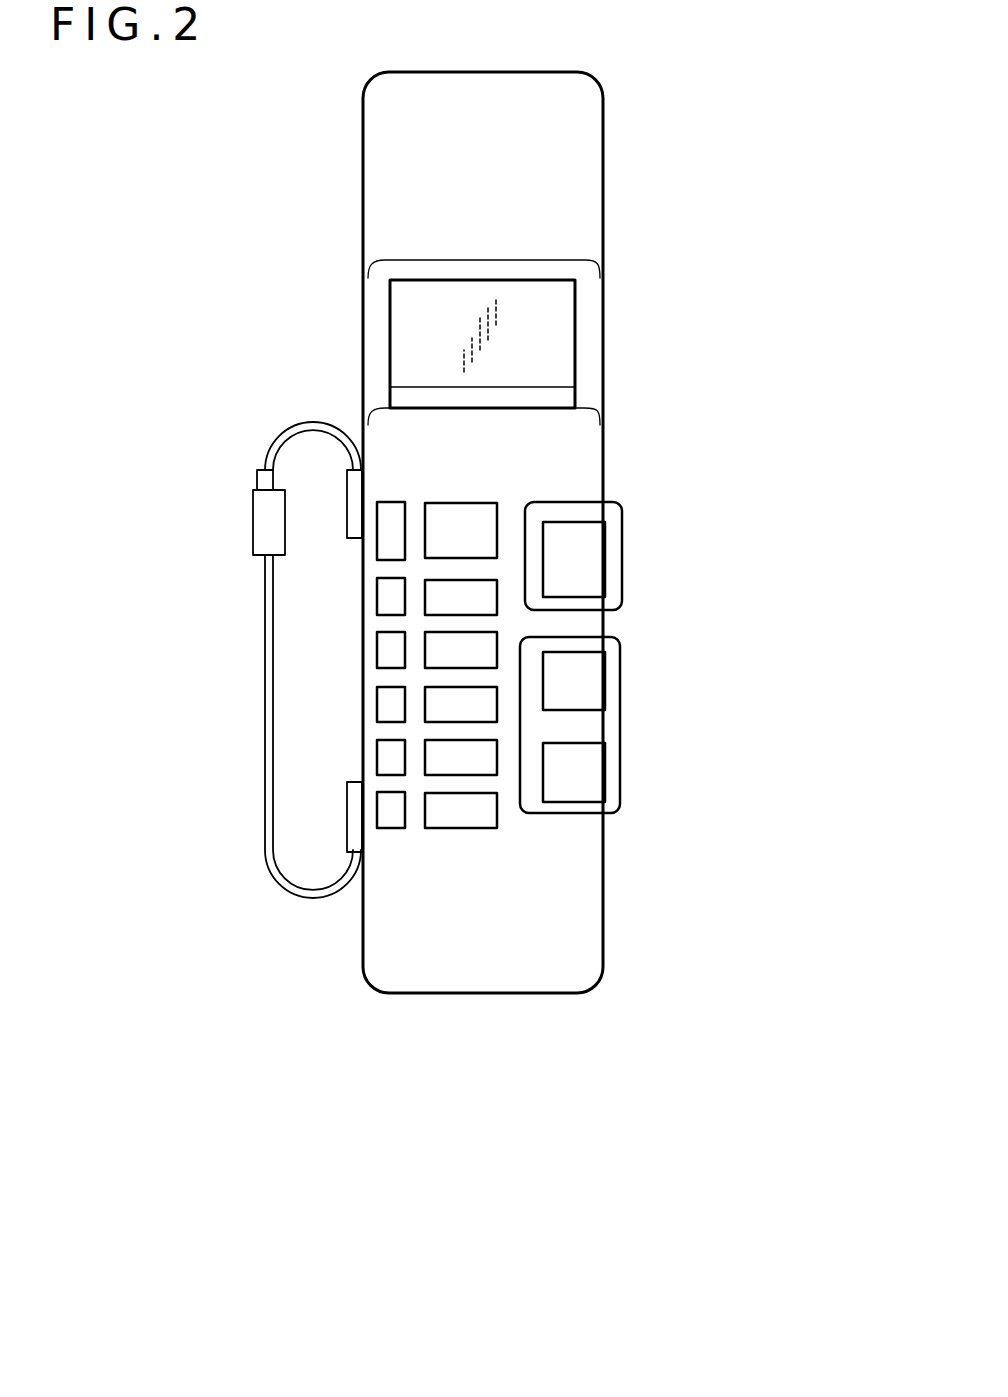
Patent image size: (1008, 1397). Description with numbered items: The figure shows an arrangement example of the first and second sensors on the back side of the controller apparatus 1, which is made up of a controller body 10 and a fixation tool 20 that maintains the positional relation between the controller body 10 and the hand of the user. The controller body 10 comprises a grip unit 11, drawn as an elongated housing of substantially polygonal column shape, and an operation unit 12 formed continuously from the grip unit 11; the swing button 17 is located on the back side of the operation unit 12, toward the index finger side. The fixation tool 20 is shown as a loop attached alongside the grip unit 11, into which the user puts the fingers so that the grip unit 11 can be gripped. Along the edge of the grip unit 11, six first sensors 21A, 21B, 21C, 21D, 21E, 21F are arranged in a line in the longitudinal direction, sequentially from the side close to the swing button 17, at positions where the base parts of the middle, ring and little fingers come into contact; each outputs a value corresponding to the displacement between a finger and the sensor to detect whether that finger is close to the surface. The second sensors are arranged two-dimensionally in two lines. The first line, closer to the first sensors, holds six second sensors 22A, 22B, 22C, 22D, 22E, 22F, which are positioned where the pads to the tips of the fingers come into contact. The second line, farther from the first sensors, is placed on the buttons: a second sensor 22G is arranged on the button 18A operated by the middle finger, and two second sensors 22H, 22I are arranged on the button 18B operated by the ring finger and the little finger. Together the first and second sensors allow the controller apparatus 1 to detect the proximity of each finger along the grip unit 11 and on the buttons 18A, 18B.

The controller apparatus 1 is at (362, 1193).
The controller body 10 is at (323, 321).
The grip unit 11 is at (483, 1030).
The operation unit 12 is at (658, 305).
The swing button 17 is at (567, 350).
The button 18A is at (664, 556).
The button 18B is at (668, 725).
The fixation tool 20 is at (270, 878).
The first sensor 21A is at (390, 525).
The first sensor 21B is at (390, 597).
The first sensor 21C is at (390, 651).
The first sensor 21D is at (390, 705).
The first sensor 21E is at (390, 757).
The first sensor 21F is at (390, 808).
The second sensor 22A is at (461, 530).
The second sensor 22B is at (461, 597).
The second sensor 22C is at (461, 650).
The second sensor 22D is at (461, 704).
The second sensor 22E is at (461, 757).
The second sensor 22F is at (461, 810).
The second sensor 22G is at (622, 553).
The second sensor 22H is at (574, 681).
The second sensor 22I is at (620, 724).